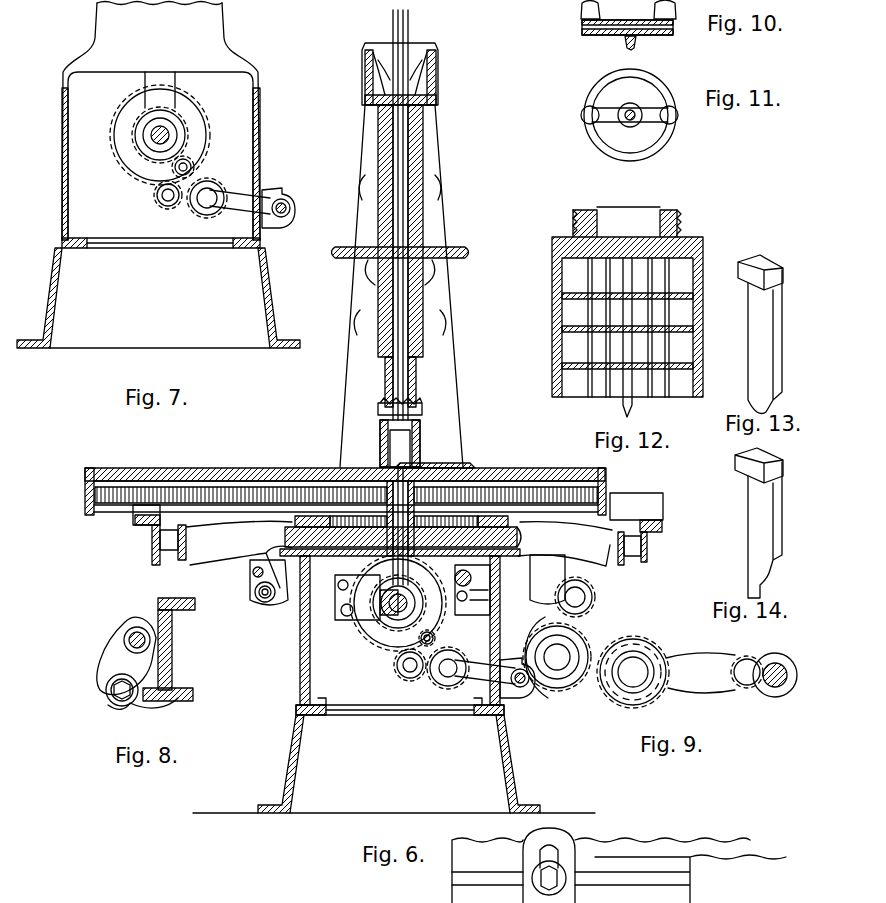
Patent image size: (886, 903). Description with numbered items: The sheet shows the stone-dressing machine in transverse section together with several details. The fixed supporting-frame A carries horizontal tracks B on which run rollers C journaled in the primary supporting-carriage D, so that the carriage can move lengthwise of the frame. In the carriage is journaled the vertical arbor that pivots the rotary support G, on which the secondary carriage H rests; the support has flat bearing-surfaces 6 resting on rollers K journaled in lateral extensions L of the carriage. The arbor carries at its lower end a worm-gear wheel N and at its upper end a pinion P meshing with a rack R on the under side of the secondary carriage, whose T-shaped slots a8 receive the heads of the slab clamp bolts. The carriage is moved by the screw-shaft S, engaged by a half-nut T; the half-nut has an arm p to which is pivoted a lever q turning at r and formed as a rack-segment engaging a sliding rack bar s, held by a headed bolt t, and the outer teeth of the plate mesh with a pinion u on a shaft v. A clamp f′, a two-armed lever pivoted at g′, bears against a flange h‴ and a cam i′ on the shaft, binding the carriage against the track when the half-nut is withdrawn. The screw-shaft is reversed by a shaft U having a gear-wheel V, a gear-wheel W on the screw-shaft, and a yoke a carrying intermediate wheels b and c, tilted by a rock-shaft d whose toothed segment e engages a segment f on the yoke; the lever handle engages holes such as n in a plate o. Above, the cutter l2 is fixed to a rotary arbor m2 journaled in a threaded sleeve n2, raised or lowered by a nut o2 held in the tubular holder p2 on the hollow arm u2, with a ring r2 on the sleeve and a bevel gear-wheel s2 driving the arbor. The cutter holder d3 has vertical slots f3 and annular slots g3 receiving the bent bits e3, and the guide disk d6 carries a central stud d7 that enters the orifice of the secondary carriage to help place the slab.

In FIG. 7, the fixed supporting-frame A is at (161, 164).
In FIG. 6, the fixed supporting-frame A is at (400, 635).
In FIG. 7, the screw-shaft S is at (176, 122).
In FIG. 6, the screw-shaft S is at (398, 618).
In FIG. 7, the gear-wheel W is at (195, 147).
In FIG. 6, the gear-wheel V is at (448, 668).
In FIG. 6, the intermediate gear-wheel b is at (410, 665).
In FIG. 6, the yoke a is at (485, 672).
In FIG. 6, the rock-shaft d is at (526, 694).
In FIG. 6, the shaft U is at (442, 722).
In FIG. 10, the disk d6 is at (675, 30).
In FIG. 11, the disk d6 is at (668, 92).
In FIG. 10, the screw d7 is at (628, 44).
In FIG. 12, the holder d3 is at (552, 250).
In FIG. 12, the annular slots g3 is at (562, 296).
In FIG. 12, the vertical slots f3 is at (576, 392).
In FIG. 12, the bits e3 is at (640, 339).
In FIG. 13, the bits e3 is at (760, 334).
In FIG. 14, the bits e3 is at (759, 523).
In FIG. 6, the bits e3 is at (380, 440).
In FIG. 8, the primary supporting-carriage D is at (179, 649).
In FIG. 6, the primary supporting-carriage D is at (245, 553).
In FIG. 8, the shaft v is at (130, 630).
In FIG. 6, the shaft v is at (271, 581).
In FIG. 8, the cam i′ is at (112, 614).
In FIG. 8, the clamp f′ is at (105, 663).
In FIG. 6, the clamp f′ is at (247, 615).
In FIG. 8, the pivot g′ is at (105, 697).
In FIG. 7, the intermediate gear-wheel c is at (582, 597).
In FIG. 7, the toothed segment e is at (751, 662).
In FIG. 7, the toothed segment f is at (740, 658).
In FIG. 6, the bevel gear-wheel s2 is at (440, 96).
In FIG. 6, the hollow arm u2 is at (345, 372).
In FIG. 6, the tubular holder p2 is at (425, 208).
In FIG. 6, the nut o2 is at (428, 240).
In FIG. 6, the sleeve n2 is at (420, 362).
In FIG. 6, the rotary arbor m2 is at (418, 380).
In FIG. 6, the ring r2 is at (424, 410).
In FIG. 6, the cutter l2 is at (410, 443).
In FIG. 6, the pinion P is at (378, 462).
In FIG. 6, the secondary carriage H is at (345, 486).
In FIG. 6, the rack R is at (200, 468).
In FIG. 6, the T-shaped slots a8 is at (148, 468).
In FIG. 6, the rotary support G is at (520, 522).
In FIG. 6, the rollers K is at (398, 543).
In FIG. 6, the lateral extensions L is at (385, 574).
In FIG. 6, the flat bearing-surfaces 6 is at (140, 528).
In FIG. 6, the rollers C is at (258, 612).
In FIG. 6, the rack bar s is at (272, 576).
In FIG. 6, the pinion u is at (241, 593).
In FIG. 6, the tracks B is at (404, 618).
In FIG. 6, the half-nut T is at (355, 659).
In FIG. 6, the hole n is at (423, 628).
In FIG. 6, the plate o is at (472, 600).
In FIG. 6, the worm-gear wheel N is at (358, 597).
In FIG. 6, the headed bolt t is at (325, 575).
In FIG. 6, the pivot r is at (320, 589).
In FIG. 6, the lever q is at (323, 625).
In FIG. 6, the arm p is at (322, 644).